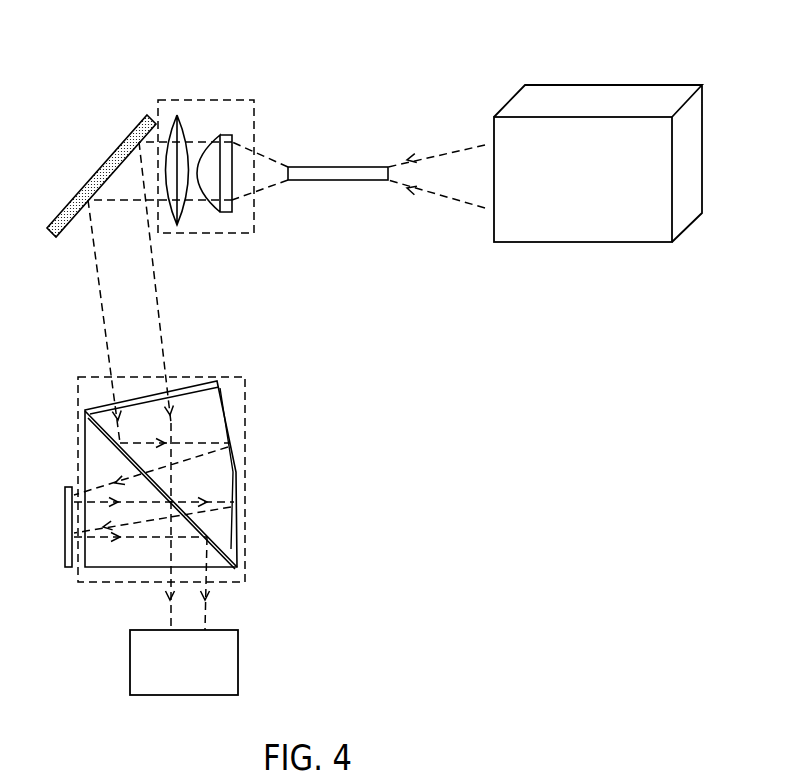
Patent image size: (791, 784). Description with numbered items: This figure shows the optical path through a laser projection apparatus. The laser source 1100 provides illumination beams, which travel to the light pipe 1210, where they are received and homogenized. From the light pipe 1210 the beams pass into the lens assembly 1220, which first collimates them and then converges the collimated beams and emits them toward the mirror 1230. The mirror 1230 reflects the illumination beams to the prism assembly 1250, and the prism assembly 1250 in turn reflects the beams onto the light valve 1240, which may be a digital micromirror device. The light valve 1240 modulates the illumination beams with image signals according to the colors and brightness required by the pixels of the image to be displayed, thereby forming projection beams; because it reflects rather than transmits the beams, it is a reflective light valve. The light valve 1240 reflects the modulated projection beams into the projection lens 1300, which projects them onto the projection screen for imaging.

The laser source 1100 is at (618, 85).
The light pipe 1210 is at (360, 166).
The lens assembly 1220 is at (223, 98).
The mirror 1230 is at (90, 175).
The light valve 1240 is at (63, 533).
The prism assembly 1250 is at (245, 400).
The projection lens 1300 is at (130, 670).